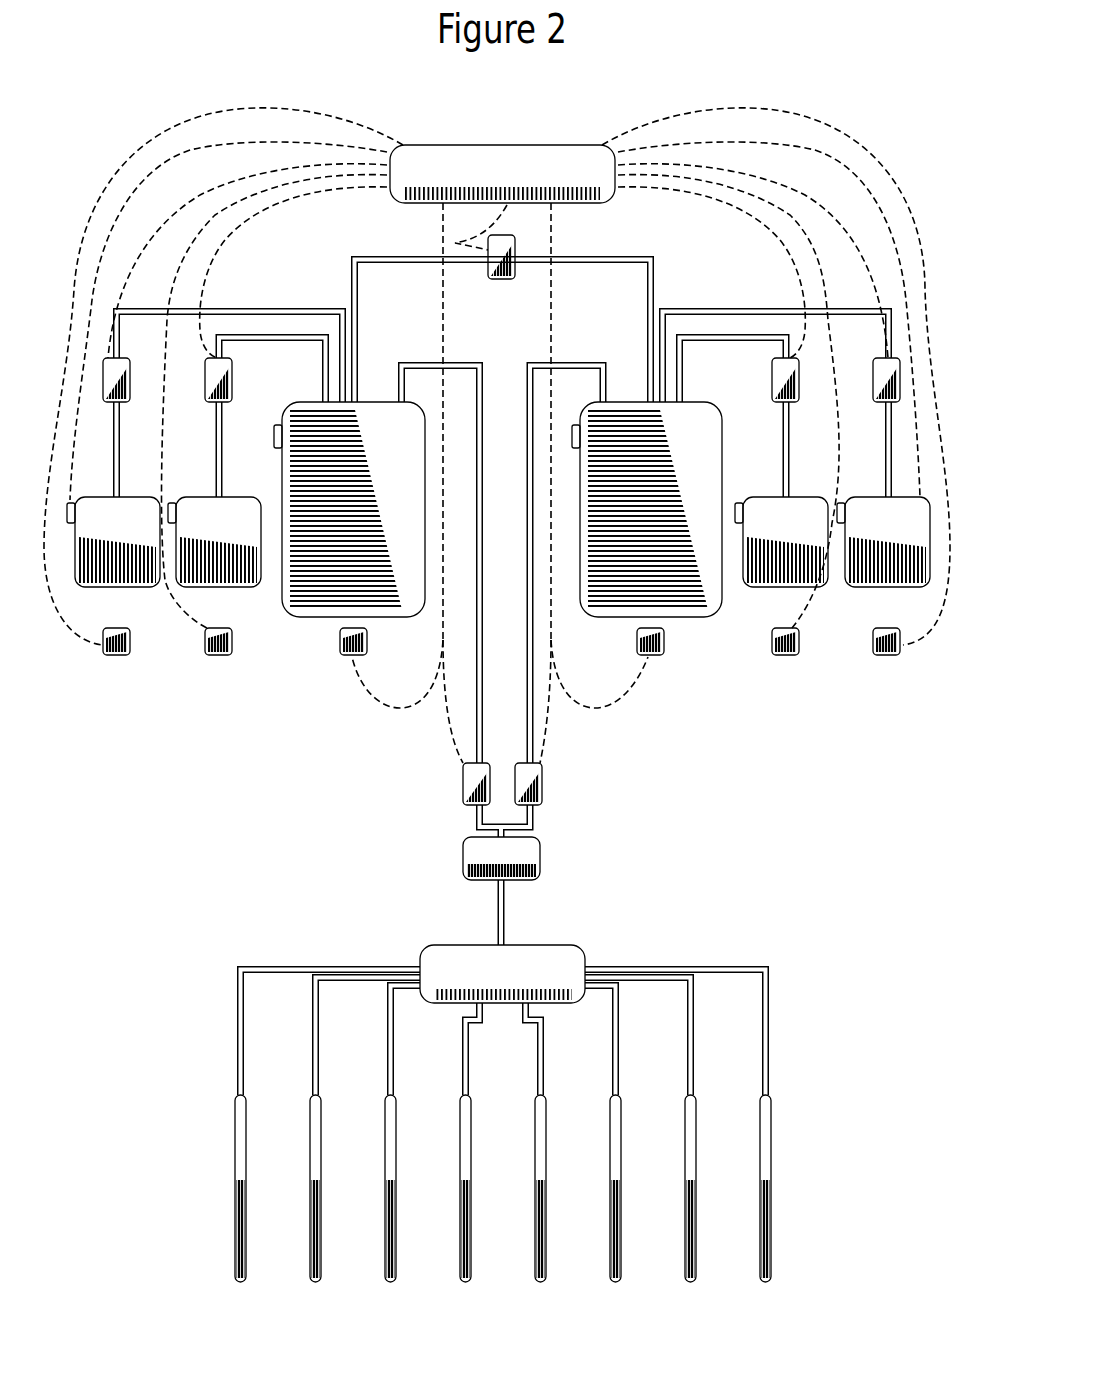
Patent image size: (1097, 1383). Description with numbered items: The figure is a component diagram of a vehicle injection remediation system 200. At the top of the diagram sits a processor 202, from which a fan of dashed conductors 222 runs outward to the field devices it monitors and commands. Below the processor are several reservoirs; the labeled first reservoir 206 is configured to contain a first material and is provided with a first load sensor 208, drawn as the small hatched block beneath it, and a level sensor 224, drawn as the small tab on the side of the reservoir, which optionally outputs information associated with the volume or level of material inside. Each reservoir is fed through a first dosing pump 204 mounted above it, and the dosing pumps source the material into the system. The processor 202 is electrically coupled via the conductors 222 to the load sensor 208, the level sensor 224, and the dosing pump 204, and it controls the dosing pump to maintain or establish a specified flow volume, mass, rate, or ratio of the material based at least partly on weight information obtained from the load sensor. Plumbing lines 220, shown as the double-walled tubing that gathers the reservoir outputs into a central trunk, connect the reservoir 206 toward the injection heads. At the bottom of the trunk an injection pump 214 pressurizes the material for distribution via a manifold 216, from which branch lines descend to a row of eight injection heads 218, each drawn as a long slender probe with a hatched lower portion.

The vehicle injection remediation system 200 is at (863, 52).
The processor 202 is at (530, 145).
The first dosing pump 204 is at (105, 390).
The first reservoir 206 is at (127, 562).
The first load sensor 208 is at (117, 657).
The injection pump 214 is at (527, 866).
The manifold 216 is at (557, 963).
The injection head 218 is at (770, 1206).
The plumbing lines 220 is at (349, 280).
The conductors 222 is at (318, 104).
The level sensor 224 is at (72, 513).